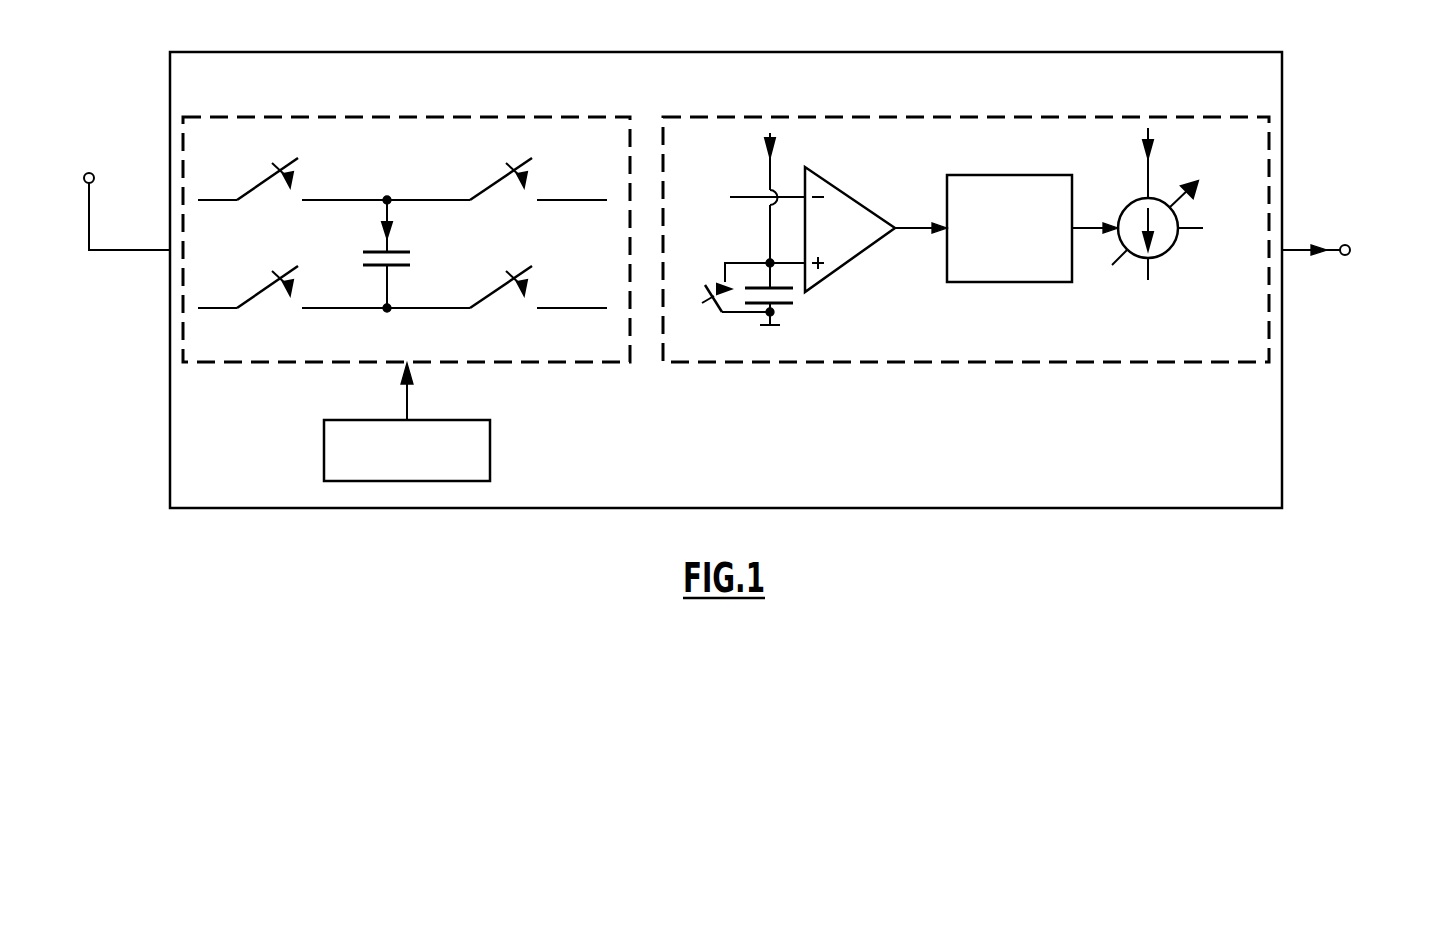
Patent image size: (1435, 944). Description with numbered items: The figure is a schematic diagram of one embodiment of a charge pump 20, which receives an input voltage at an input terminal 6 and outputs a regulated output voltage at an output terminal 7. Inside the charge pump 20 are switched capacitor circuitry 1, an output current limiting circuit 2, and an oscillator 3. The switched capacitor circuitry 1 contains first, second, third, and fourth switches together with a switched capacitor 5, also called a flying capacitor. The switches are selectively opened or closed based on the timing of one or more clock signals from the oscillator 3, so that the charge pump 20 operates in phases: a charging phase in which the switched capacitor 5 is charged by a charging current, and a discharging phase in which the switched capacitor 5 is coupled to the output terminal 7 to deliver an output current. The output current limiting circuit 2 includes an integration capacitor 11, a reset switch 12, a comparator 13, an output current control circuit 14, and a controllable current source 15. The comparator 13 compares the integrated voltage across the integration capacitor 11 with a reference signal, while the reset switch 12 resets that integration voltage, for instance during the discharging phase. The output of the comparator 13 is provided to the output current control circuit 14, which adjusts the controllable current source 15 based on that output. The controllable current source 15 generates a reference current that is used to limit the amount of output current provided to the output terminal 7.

The switched capacitor circuitry 1 is at (406, 246).
The output current limiting circuit 2 is at (966, 246).
The oscillator 3 is at (490, 450).
The switched capacitor 5 is at (372, 268).
The input terminal 6 is at (86, 182).
The output terminal 7 is at (1345, 244).
The integration capacitor 11 is at (788, 305).
The reset switch 12 is at (716, 313).
The comparator 13 is at (855, 258).
The output current control circuit 14 is at (1028, 282).
The controllable current source 15 is at (1170, 252).
The charge pump 20 is at (1282, 78).